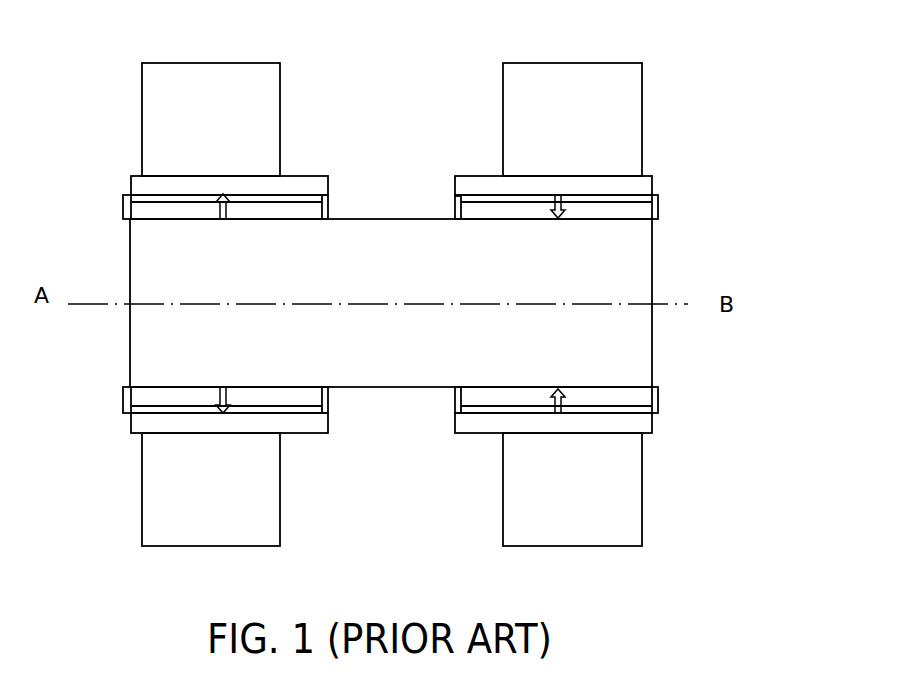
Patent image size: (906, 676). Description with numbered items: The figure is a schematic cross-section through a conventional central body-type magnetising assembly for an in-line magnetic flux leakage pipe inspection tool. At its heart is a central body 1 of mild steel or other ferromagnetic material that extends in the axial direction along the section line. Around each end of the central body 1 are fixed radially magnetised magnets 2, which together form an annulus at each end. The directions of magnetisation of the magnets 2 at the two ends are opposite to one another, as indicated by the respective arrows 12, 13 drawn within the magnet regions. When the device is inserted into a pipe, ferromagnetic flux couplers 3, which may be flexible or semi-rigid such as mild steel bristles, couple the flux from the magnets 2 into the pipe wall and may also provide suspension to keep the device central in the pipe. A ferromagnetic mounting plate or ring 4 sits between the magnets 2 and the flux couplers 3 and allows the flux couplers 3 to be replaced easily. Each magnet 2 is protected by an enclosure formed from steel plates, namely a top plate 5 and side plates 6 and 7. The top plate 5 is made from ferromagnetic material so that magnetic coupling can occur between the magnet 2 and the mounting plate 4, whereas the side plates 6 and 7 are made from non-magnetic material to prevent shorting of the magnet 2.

The central body 1 is at (637, 273).
The magnets 2 is at (645, 397).
The flux couplers 3 is at (625, 107).
The mounting plate 4 is at (640, 185).
The top plate 5 is at (625, 420).
The side plate 6 is at (660, 210).
The side plate 7 is at (455, 198).
The arrow 12 is at (228, 215).
The arrow 13 is at (553, 207).